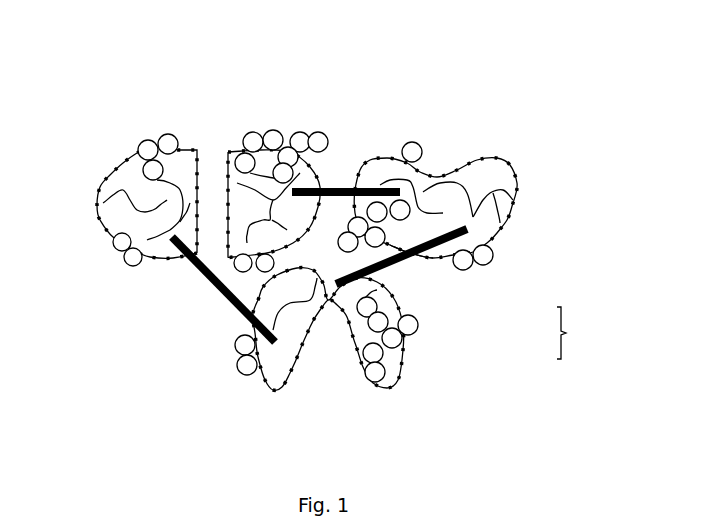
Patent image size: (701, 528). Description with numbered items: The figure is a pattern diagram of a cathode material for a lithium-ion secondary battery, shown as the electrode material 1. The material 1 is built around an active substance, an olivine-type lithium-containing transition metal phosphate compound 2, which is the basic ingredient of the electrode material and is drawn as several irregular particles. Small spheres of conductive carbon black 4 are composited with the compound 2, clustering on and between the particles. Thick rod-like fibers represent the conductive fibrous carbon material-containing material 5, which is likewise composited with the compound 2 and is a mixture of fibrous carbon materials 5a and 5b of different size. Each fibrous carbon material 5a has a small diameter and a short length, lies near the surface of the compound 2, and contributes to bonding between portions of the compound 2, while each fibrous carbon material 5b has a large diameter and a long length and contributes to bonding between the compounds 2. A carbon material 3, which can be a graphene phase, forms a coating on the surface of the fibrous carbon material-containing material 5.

The electrode material for a lithium-ion secondary battery 1 is at (390, 125).
The olivine-type lithium-containing transition metal phosphate compound 2 is at (185, 168).
The carbon material 3 is at (115, 170).
The conductive carbon black 4 is at (133, 260).
The conductive fibrous carbon material-containing material 5 is at (574, 333).
The fibrous carbon material 5a is at (500, 263).
The fibrous carbon material 5b is at (410, 257).